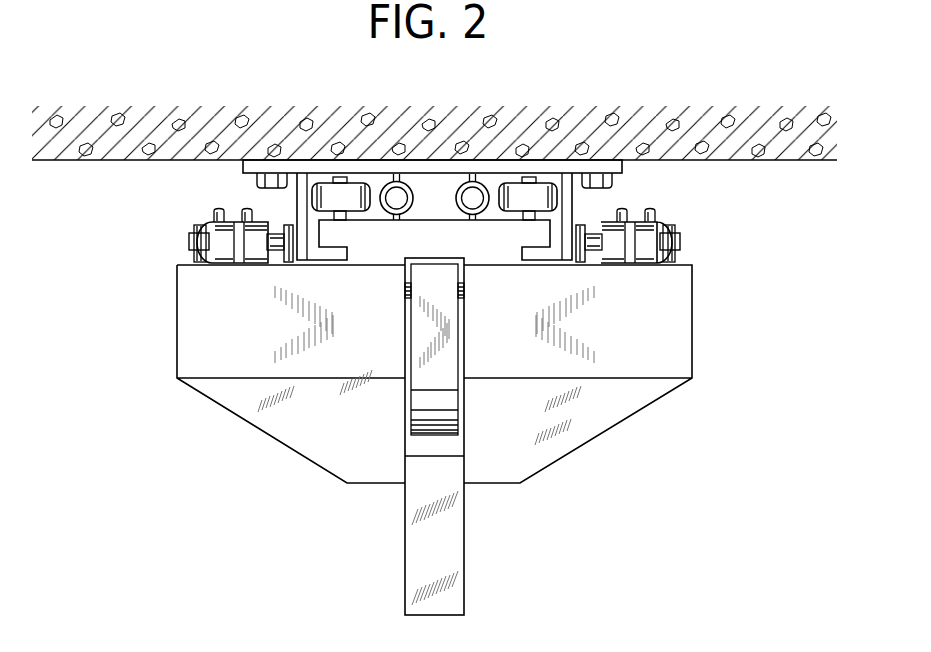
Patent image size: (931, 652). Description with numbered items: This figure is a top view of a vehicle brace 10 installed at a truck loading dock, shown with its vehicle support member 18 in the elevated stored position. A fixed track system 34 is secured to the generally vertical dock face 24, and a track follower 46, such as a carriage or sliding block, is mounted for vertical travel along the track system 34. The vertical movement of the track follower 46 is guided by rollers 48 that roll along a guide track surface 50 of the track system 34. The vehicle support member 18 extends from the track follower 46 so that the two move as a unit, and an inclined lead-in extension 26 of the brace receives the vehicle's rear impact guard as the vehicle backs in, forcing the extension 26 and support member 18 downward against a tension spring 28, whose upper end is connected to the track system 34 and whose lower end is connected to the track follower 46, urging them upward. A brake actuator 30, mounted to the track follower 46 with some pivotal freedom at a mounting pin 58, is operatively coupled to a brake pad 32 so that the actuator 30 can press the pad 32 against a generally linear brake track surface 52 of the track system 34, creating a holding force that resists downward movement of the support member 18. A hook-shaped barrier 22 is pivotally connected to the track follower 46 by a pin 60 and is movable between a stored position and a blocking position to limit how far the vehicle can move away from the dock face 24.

The vehicle brace 10 is at (752, 287).
The vehicle support member 18 is at (203, 338).
The barrier 22 is at (420, 436).
The dock face 24 is at (82, 162).
The lead-in extension 26 is at (440, 527).
The tension spring 28 is at (410, 213).
The brake actuator 30 is at (210, 222).
The brake pad 32 is at (283, 236).
The fixed track system 34 is at (573, 203).
The track follower 46 is at (430, 212).
The rollers 48 is at (367, 211).
The guide track surface 50 is at (540, 196).
The brake track surface 52 is at (573, 250).
The mounting pin 58 is at (189, 255).
The pin 60 is at (405, 290).